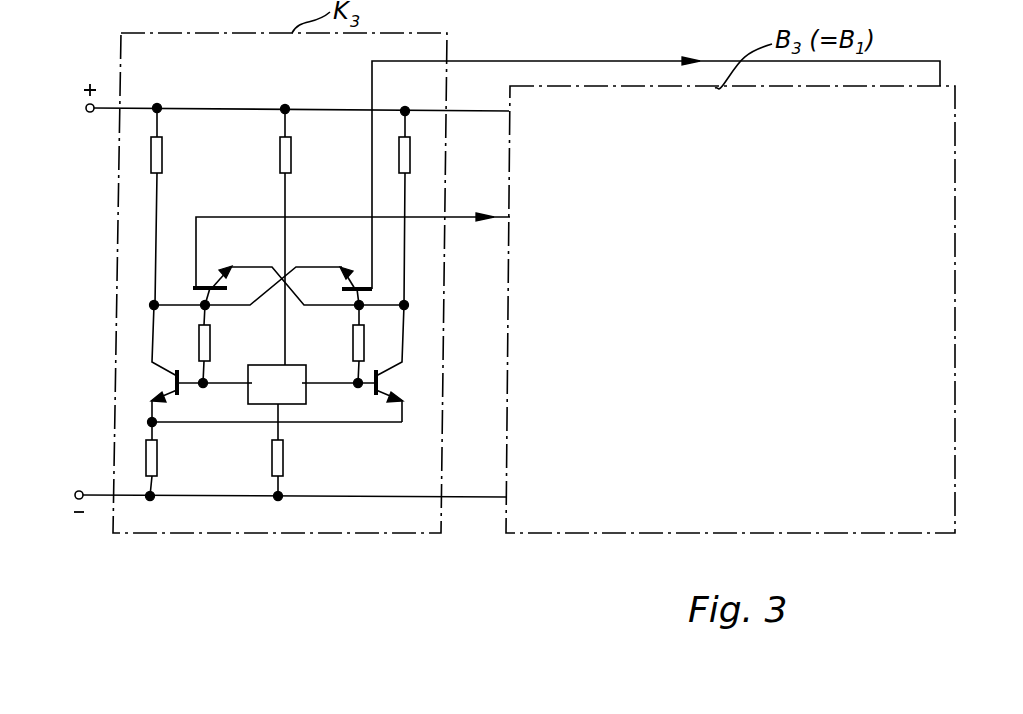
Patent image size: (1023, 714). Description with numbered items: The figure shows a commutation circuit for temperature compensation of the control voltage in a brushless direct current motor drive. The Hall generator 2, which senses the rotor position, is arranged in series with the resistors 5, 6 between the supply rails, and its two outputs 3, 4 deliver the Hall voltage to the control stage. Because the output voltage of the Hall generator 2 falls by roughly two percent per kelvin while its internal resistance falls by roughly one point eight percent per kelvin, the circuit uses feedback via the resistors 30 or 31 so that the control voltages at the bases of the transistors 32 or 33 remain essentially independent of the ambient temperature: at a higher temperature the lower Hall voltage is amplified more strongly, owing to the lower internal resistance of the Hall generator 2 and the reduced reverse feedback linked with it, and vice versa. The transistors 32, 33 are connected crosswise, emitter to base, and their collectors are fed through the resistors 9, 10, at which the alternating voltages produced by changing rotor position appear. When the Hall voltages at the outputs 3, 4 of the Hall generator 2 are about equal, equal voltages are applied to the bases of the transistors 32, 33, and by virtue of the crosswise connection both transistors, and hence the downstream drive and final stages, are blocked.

The resistor 9 is at (166, 206).
The resistor 5 is at (295, 237).
The resistor 10 is at (424, 208).
The transistor 32 is at (197, 284).
The transistor 33 is at (373, 284).
The resistor 30 is at (190, 344).
The resistor 31 is at (376, 344).
The Hall generator 2 is at (274, 366).
The Hall generator output 3 is at (256, 389).
The Hall generator output 4 is at (297, 389).
The resistor 6 is at (287, 450).